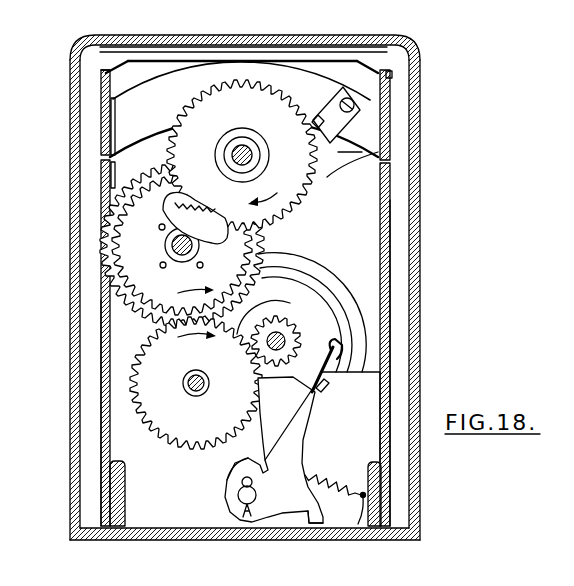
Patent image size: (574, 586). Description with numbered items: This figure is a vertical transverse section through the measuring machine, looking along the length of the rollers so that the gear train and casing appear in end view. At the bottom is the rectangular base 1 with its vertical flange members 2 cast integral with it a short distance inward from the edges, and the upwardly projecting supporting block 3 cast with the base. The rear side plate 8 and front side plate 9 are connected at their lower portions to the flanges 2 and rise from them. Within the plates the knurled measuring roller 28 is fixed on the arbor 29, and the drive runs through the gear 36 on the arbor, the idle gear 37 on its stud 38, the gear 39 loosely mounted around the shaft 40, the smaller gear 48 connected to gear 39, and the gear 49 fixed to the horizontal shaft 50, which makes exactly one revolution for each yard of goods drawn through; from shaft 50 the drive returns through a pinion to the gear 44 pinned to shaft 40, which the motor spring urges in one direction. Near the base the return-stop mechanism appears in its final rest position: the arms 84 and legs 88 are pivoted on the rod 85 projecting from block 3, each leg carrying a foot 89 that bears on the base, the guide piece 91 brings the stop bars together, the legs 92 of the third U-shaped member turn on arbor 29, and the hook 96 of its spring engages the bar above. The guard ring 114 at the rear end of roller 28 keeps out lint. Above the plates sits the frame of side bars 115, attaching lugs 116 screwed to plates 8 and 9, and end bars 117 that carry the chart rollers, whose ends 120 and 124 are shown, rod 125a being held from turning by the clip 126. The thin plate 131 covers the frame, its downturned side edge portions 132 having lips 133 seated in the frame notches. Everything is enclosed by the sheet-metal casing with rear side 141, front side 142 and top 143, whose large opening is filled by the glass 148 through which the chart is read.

The base 1 is at (203, 533).
The vertical flange members 2 is at (377, 496).
The supporting block 3 is at (368, 429).
The rear side plate 8 is at (100, 386).
The front side plate 9 is at (388, 345).
The measuring roller 28 is at (330, 270).
The arbor 29 is at (260, 353).
The gear 36 is at (302, 333).
The idle gear 37 is at (192, 433).
The stud 38 is at (193, 390).
The gear 39 is at (137, 268).
The shaft 40 is at (182, 257).
The gear 44 is at (108, 253).
The smaller gear 48 is at (208, 238).
The gear 49 is at (302, 197).
The horizontal shaft 50 is at (257, 149).
The arms 84 is at (233, 456).
The rod 85 is at (244, 503).
The legs 88 is at (297, 444).
The foot 89 is at (315, 519).
The guide piece 91 is at (318, 389).
The legs 92 is at (308, 342).
The hook 96 is at (340, 343).
The guard ring 114 is at (302, 273).
The side bars 115 is at (387, 115).
The attaching lugs 116 is at (383, 187).
The end bars 117 is at (152, 90).
The roller end 120 is at (182, 68).
The roller end 124 is at (338, 152).
The stud 125a is at (320, 123).
The clip 126 is at (352, 104).
The plate 131 is at (207, 60).
The side edge portions 132 is at (370, 65).
The lips 133 is at (390, 75).
The rear side 141 is at (68, 203).
The front side 142 is at (420, 273).
The top 143 is at (245, 42).
The glass 148 is at (320, 50).